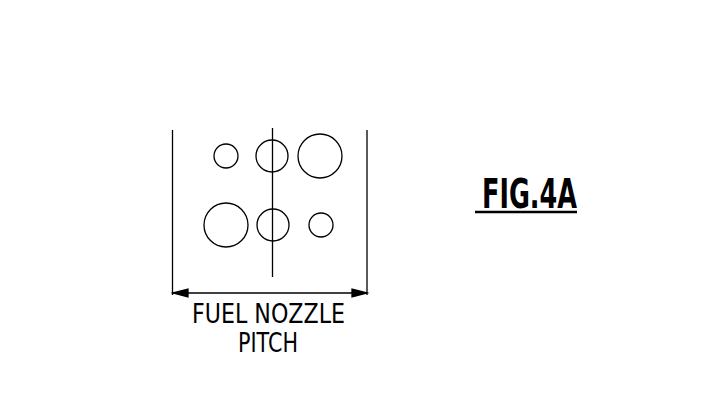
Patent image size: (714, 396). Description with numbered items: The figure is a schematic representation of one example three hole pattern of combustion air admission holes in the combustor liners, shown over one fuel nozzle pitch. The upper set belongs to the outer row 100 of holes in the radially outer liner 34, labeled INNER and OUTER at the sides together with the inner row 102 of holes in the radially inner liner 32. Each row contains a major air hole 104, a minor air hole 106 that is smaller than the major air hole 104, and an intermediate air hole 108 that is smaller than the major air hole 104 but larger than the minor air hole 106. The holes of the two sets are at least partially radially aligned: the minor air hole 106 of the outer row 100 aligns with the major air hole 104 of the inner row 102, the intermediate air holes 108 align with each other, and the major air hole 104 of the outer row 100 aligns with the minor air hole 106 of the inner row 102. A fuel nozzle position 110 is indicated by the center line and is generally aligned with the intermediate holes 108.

The outer row of combustion air holes 100 is at (225, 184).
The inner row of combustion air holes 102 is at (150, 148).
The major air hole 104 is at (332, 138).
The minor air hole 106 is at (217, 148).
The intermediate air hole 108 is at (260, 217).
The fuel nozzle position 110 is at (272, 140).
The radially inner liner 32 is at (455, 152).
The radially outer liner 34 is at (456, 240).